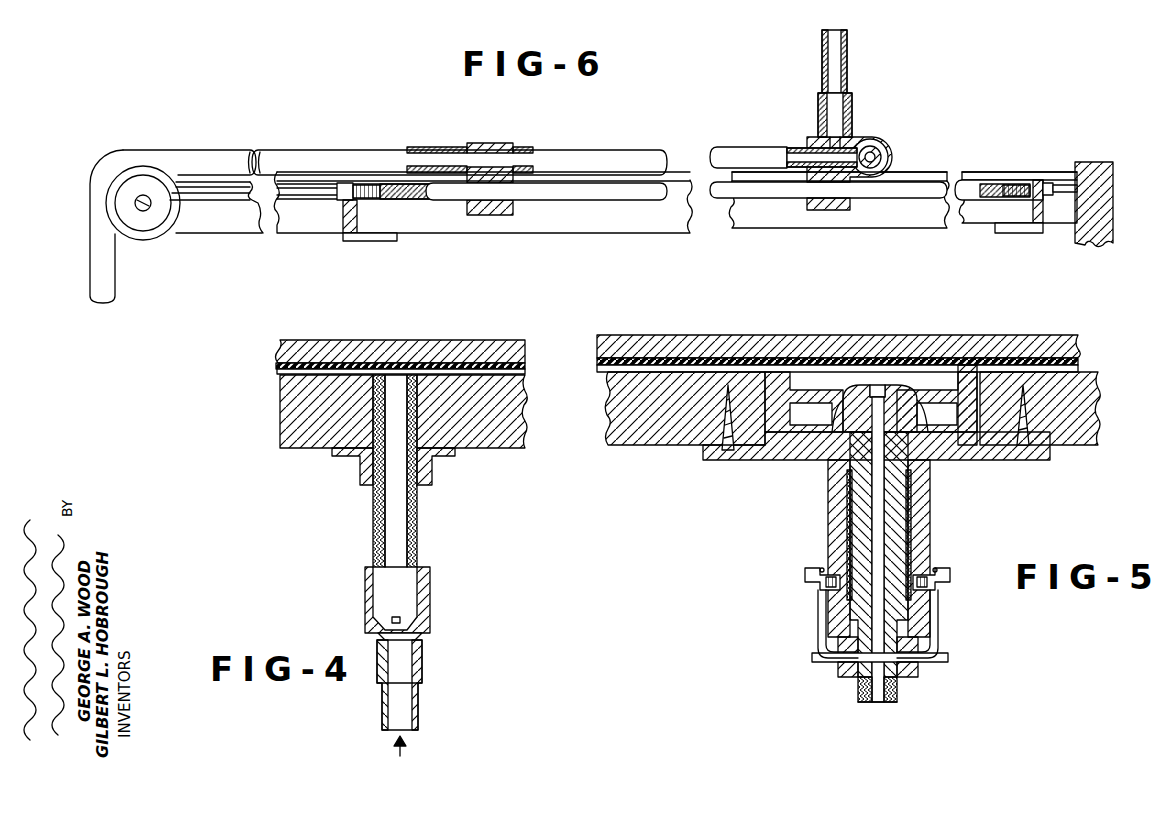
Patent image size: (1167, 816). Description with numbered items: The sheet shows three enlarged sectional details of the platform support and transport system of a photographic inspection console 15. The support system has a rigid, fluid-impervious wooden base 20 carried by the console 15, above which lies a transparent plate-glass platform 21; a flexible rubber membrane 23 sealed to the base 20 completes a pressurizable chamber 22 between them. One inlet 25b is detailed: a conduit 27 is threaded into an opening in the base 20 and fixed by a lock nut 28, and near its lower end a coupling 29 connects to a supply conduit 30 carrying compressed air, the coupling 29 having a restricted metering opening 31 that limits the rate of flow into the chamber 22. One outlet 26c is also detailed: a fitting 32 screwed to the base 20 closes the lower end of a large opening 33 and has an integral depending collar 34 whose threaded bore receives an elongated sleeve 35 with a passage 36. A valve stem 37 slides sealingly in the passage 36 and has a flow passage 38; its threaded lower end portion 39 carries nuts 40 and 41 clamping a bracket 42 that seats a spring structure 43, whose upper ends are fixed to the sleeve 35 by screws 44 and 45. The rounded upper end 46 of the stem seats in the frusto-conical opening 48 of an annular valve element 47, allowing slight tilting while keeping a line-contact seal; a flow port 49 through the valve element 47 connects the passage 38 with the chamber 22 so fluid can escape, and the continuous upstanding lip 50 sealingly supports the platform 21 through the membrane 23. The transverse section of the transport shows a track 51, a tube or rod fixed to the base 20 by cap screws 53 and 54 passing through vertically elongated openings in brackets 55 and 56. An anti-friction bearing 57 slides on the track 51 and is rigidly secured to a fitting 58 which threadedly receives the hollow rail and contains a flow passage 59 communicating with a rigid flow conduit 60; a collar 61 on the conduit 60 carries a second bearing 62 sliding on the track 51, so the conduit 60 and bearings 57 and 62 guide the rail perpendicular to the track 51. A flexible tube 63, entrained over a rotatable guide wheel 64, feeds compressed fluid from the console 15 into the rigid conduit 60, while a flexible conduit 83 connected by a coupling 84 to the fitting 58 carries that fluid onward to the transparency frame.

In FIG. 6, the console 15 is at (1100, 162).
In FIG. 6, the base 20 is at (925, 215).
In FIG. 4, the base 20 is at (490, 442).
In FIG. 5, the base 20 is at (635, 440).
In FIG. 6, the platform 21 is at (935, 173).
In FIG. 4, the platform 21 is at (462, 342).
In FIG. 5, the platform 21 is at (612, 343).
In FIG. 4, the pressurizable chamber 22 is at (505, 370).
In FIG. 5, the pressurizable chamber 22 is at (660, 370).
In FIG. 4, the membrane 23 is at (475, 362).
In FIG. 5, the membrane 23 is at (632, 362).
In FIG. 4, the inlet 25b is at (392, 375).
In FIG. 5, the outlet 26c is at (780, 372).
In FIG. 4, the conduit 27 is at (375, 537).
In FIG. 4, the lock nut 28 is at (360, 472).
In FIG. 4, the coupling 29 is at (425, 597).
In FIG. 4, the supply conduit 30 is at (420, 710).
In FIG. 4, the restricted metering opening 31 is at (415, 640).
In FIG. 5, the fitting 32 is at (770, 455).
In FIG. 5, the opening 33 is at (985, 375).
In FIG. 5, the collar 34 is at (828, 492).
In FIG. 5, the sleeve 35 is at (830, 525).
In FIG. 5, the passage 36 is at (845, 545).
In FIG. 5, the valve stem 37 is at (910, 550).
In FIG. 5, the flow passage 38 is at (880, 575).
In FIG. 5, the lower end portion 39 is at (897, 695).
In FIG. 5, the nut 40 is at (918, 650).
In FIG. 5, the nut 41 is at (912, 672).
In FIG. 5, the bracket 42 is at (948, 658).
In FIG. 5, the spring structure 43 is at (818, 622).
In FIG. 5, the screw 44 is at (805, 583).
In FIG. 5, the screw 45 is at (950, 580).
In FIG. 5, the upper end 46 is at (893, 395).
In FIG. 5, the valve element 47 is at (858, 398).
In FIG. 5, the frusto-conical opening 48 is at (840, 395).
In FIG. 5, the flow port 49 is at (873, 385).
In FIG. 5, the lip 50 is at (965, 368).
In FIG. 6, the track 51 is at (588, 195).
In FIG. 6, the cap screw 53 is at (1015, 182).
In FIG. 6, the cap screw 54 is at (360, 183).
In FIG. 6, the bracket 55 is at (1008, 233).
In FIG. 6, the bracket 56 is at (365, 242).
In FIG. 6, the bearing 57 is at (822, 212).
In FIG. 6, the fitting 58 is at (865, 140).
In FIG. 6, the flow passage 59 is at (820, 150).
In FIG. 6, the rigid flow conduit 60 is at (650, 135).
In FIG. 6, the collar 61 is at (495, 143).
In FIG. 6, the bearing 62 is at (485, 216).
In FIG. 6, the flexible tube 63 is at (208, 165).
In FIG. 6, the guide wheel 64 is at (160, 230).
In FIG. 6, the flexible conduit 83 is at (848, 45).
In FIG. 6, the coupling 84 is at (850, 100).